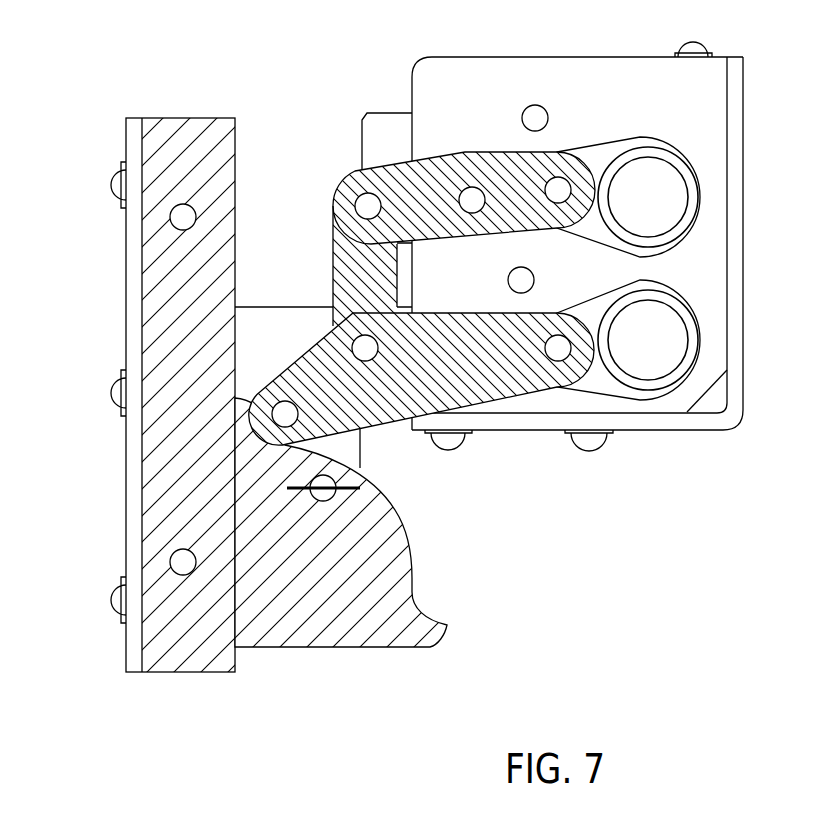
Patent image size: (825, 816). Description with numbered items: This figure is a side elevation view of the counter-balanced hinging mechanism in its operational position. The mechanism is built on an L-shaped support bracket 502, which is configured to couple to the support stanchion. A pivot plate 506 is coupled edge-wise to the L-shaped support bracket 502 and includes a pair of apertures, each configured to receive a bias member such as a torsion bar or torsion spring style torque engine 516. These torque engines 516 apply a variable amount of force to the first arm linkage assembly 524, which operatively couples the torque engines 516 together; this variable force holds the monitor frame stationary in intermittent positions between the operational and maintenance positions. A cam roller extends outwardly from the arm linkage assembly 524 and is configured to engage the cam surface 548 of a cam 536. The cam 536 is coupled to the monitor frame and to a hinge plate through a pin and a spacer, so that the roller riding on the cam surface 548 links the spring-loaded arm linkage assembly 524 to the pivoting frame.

The L-shaped support bracket 502 is at (735, 365).
The second pivot plate 506 is at (575, 88).
The torque engine 516 is at (700, 178).
The first arm linkage assembly 524 is at (380, 275).
The cam 536 is at (273, 555).
The cam surface 548 is at (413, 577).